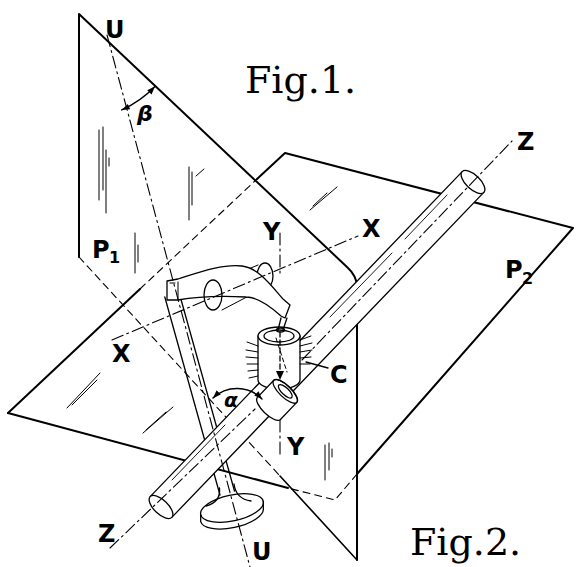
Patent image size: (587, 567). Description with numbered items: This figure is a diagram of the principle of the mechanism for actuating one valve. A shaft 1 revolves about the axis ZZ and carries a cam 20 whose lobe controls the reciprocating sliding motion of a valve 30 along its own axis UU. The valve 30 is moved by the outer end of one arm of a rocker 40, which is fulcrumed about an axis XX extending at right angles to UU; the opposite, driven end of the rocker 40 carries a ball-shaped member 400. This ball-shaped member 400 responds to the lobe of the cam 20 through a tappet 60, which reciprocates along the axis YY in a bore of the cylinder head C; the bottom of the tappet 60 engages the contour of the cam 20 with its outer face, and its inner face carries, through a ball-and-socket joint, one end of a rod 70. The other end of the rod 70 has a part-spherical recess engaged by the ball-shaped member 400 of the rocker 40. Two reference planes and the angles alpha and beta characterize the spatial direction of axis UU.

The shaft 1 is at (455, 212).
The cam 20 is at (293, 402).
The valve 30 is at (217, 524).
The rocker 40 is at (213, 275).
The tappet 60 is at (257, 360).
The rod 70 is at (284, 328).
The ball-shaped member 400 is at (257, 343).